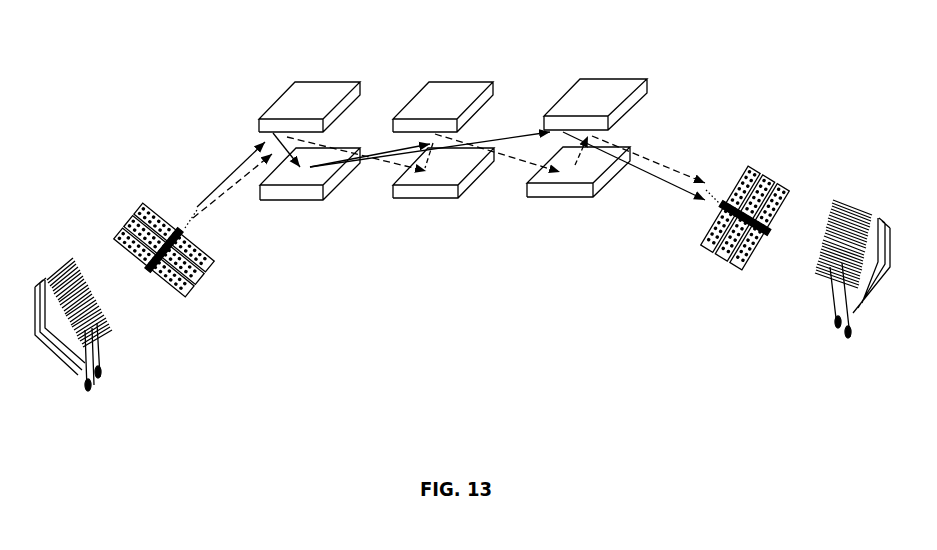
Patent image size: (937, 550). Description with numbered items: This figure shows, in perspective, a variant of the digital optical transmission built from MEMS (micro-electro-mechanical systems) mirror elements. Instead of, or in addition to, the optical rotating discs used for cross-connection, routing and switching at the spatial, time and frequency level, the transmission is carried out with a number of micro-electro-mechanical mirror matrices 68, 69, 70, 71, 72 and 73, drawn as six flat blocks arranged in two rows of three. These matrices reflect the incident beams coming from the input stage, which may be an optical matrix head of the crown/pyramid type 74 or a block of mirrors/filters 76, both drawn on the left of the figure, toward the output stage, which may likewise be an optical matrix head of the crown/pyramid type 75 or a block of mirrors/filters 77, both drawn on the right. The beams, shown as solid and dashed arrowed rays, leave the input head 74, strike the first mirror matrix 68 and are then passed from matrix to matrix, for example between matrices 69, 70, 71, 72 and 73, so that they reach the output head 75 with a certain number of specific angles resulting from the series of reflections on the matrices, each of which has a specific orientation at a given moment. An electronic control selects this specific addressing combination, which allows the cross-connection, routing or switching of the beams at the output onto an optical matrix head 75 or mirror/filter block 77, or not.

The micro-electro-mechanical mirror matrix 68 is at (317, 87).
The micro-electro-mechanical mirror matrix 69 is at (290, 204).
The micro-electro-mechanical mirror matrix 70 is at (450, 86).
The micro-electro-mechanical mirror matrix 71 is at (424, 204).
The micro-electro-mechanical mirror matrix 72 is at (633, 82).
The micro-electro-mechanical mirror matrix 73 is at (560, 203).
The optical matrix head of the crown/pyramid type 74 is at (142, 197).
The optical matrix head of the crown/pyramid type 75 is at (780, 172).
The block of mirrors/filters 76 is at (73, 245).
The block of mirrors/filters 77 is at (853, 202).